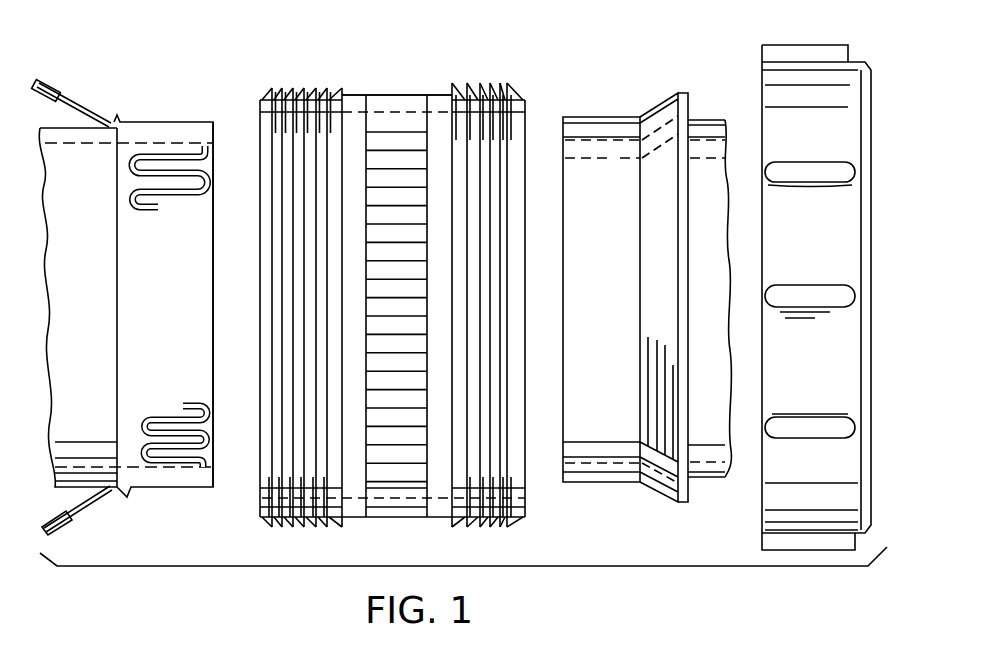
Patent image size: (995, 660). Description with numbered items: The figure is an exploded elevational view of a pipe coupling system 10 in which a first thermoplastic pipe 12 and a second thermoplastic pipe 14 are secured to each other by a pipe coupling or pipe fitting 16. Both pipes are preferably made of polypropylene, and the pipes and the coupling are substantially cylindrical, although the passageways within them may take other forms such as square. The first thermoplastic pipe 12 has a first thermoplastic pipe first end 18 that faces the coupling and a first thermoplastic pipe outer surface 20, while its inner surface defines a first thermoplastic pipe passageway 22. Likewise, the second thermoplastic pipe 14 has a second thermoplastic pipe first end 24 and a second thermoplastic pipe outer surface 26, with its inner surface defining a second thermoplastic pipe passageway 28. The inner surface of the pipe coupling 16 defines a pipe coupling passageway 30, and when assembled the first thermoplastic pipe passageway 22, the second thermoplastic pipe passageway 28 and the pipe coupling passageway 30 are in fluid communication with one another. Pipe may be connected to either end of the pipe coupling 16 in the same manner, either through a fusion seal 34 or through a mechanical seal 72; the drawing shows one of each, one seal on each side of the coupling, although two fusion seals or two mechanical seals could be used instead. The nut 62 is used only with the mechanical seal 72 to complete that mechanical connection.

The pipe coupling system 10 is at (459, 72).
The first thermoplastic pipe 12 is at (83, 490).
The second thermoplastic pipe 14 is at (703, 117).
The pipe coupling 16 is at (350, 95).
The first thermoplastic pipe first end 18 is at (217, 122).
The first thermoplastic pipe outer surface 20 is at (83, 126).
The first thermoplastic pipe passageway 22 is at (81, 285).
The second thermoplastic pipe first end 24 is at (561, 110).
The second thermoplastic pipe outer surface 26 is at (707, 480).
The second thermoplastic pipe passageway 28 is at (623, 398).
The pipe coupling passageway 30 is at (300, 526).
The fusion seal 34 is at (160, 122).
The nut 62 is at (773, 45).
The mechanical seal 72 is at (580, 484).